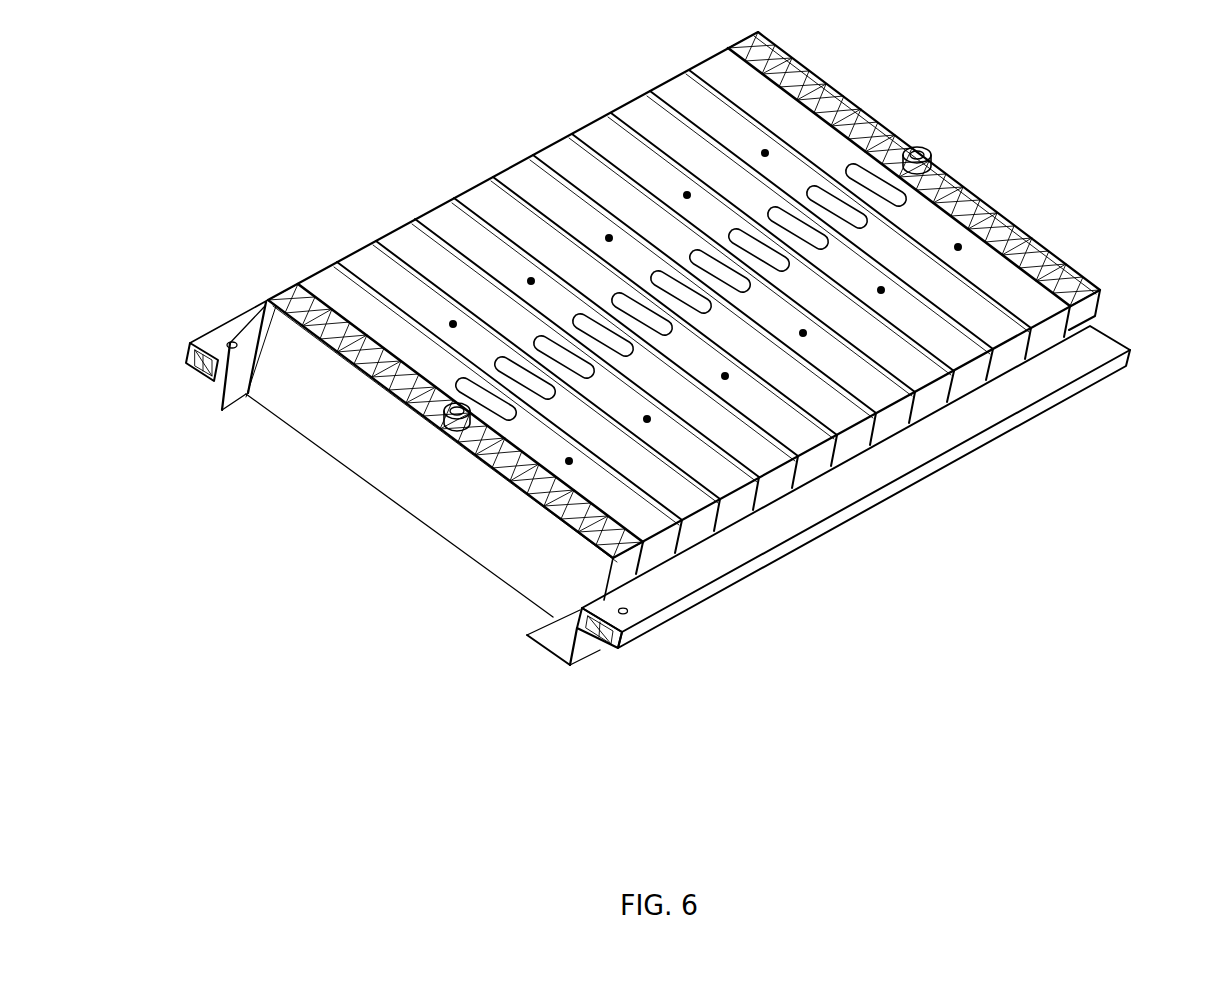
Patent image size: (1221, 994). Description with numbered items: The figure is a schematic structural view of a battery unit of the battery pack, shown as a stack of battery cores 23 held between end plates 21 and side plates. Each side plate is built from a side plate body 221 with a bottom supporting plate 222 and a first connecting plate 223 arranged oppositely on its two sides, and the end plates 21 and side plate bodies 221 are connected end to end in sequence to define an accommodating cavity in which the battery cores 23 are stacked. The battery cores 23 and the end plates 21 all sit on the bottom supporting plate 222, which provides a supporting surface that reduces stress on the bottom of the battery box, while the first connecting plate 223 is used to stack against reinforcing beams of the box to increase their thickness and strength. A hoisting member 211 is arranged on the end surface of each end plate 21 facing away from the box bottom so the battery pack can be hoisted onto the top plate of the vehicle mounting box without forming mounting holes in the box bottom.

The end plate 21 is at (1052, 228).
The hoisting member 211 is at (924, 148).
The side plate body 221 is at (587, 654).
The bottom supporting plate 222 is at (553, 636).
The first connecting plate 223 is at (710, 570).
The battery core 23 is at (835, 412).